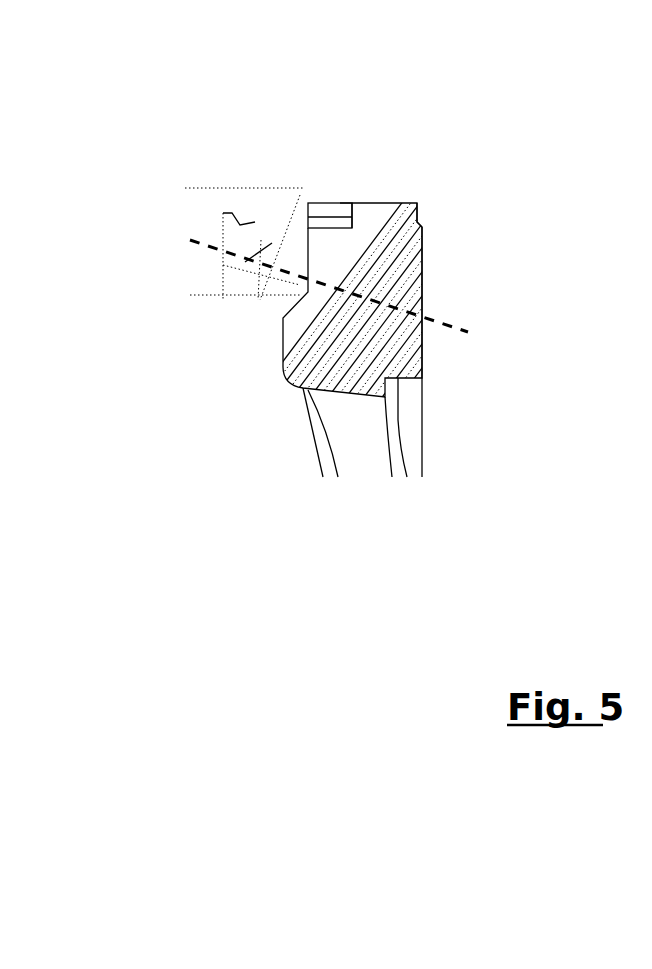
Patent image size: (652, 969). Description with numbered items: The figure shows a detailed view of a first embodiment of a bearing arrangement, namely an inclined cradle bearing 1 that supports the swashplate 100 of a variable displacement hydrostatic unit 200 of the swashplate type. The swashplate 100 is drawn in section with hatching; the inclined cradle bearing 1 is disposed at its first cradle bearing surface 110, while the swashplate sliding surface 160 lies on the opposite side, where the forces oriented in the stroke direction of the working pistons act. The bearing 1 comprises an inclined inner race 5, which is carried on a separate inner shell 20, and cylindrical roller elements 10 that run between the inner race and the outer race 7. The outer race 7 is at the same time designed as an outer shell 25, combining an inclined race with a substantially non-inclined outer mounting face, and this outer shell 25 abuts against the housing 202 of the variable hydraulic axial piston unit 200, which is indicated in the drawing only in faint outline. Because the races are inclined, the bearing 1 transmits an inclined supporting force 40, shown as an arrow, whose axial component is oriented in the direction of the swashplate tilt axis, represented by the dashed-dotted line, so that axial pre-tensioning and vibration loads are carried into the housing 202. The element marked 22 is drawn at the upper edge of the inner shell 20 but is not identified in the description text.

The inclined cradle bearing 1 is at (217, 337).
The inclined inner race 5 is at (309, 210).
The outer race 7 is at (272, 243).
The cylindrical roller elements 10 is at (270, 280).
The inner shell 20 is at (417, 203).
The upper edge 22 is at (348, 200).
The outer shell 25 is at (261, 240).
The inclined supporting force 40 is at (218, 250).
The swashplate 100 is at (400, 350).
The first cradle bearing surface 110 is at (422, 253).
The swashplate sliding surface 160 is at (422, 283).
The hydrostatic unit 200 is at (270, 473).
The housing 202 is at (255, 240).